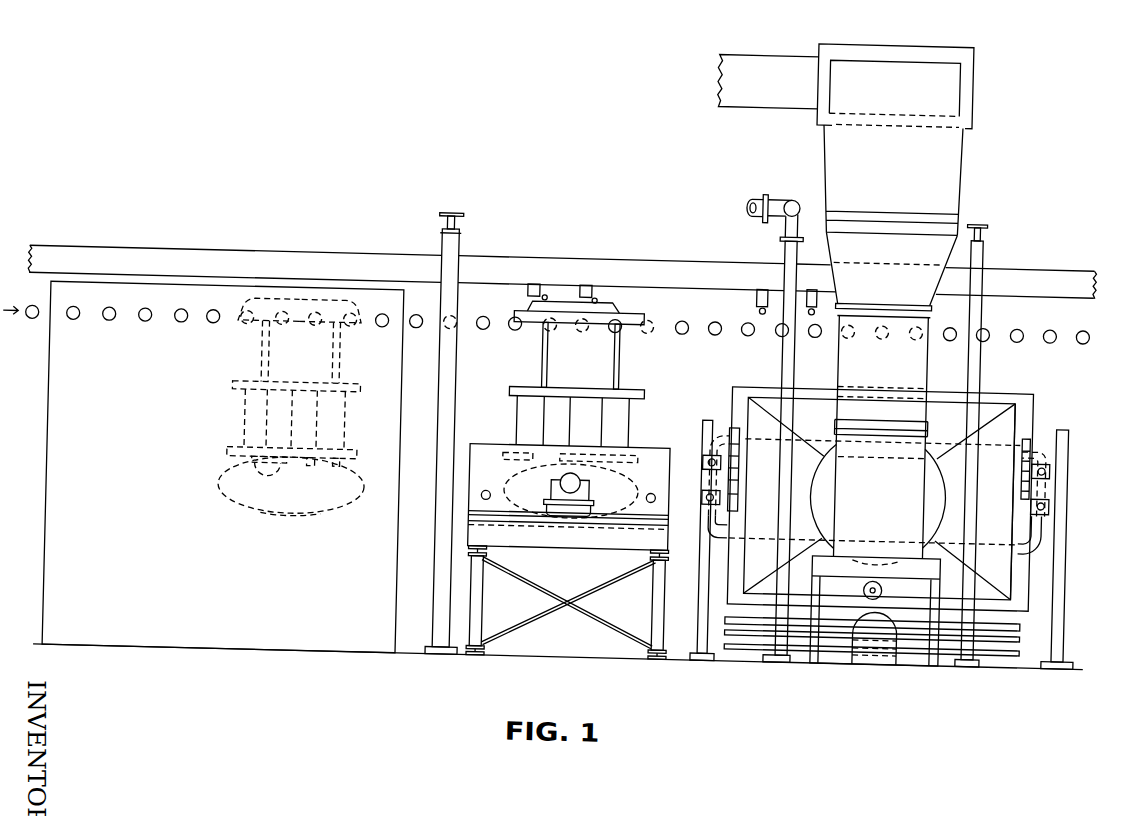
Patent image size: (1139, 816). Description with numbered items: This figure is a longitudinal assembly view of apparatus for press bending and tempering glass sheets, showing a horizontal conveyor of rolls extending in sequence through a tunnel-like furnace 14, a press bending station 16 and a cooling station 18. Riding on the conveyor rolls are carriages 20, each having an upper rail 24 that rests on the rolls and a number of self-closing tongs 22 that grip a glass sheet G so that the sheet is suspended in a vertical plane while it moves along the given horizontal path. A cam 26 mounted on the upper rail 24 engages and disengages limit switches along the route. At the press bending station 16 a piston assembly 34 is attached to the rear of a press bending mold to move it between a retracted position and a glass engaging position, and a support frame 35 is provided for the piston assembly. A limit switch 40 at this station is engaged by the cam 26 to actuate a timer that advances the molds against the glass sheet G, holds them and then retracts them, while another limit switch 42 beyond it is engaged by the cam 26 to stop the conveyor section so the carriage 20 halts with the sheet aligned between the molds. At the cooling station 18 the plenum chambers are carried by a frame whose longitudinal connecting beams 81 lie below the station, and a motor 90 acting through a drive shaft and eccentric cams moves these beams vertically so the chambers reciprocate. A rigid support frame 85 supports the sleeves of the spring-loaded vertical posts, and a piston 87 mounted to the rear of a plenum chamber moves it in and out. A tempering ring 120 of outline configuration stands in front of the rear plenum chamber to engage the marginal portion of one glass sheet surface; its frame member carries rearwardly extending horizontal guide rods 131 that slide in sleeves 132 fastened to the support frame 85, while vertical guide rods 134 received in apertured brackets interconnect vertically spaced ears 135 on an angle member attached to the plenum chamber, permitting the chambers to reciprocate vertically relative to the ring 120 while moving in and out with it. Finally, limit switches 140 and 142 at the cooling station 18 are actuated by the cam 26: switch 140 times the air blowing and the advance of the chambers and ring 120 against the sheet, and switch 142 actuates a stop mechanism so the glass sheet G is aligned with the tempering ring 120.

The tunnel-like furnace 14 is at (172, 670).
The press bending station 16 is at (574, 568).
The cooling station 18 is at (885, 542).
The carriage 20 is at (275, 414).
The tongs 22 is at (290, 485).
The upper rail 24 is at (234, 316).
The cam 26 is at (334, 305).
The glass sheet G is at (280, 520).
The piston assembly 34 is at (554, 552).
The support frame 35 is at (600, 618).
The limit switch 40 is at (542, 285).
The limit switch 42 is at (595, 284).
The longitudinal connecting beams 81 is at (1010, 624).
The rigid support frame 85 is at (695, 451).
The piston 87 is at (867, 583).
The motor 90 is at (859, 650).
The tempering ring 120 is at (1047, 552).
The horizontal guide rods 131 is at (1048, 460).
The sleeves 132 is at (1050, 468).
The vertical guide rods 134 is at (1020, 457).
The ears 135 is at (1025, 441).
The limit switch 140 is at (757, 285).
The limit switch 142 is at (824, 278).